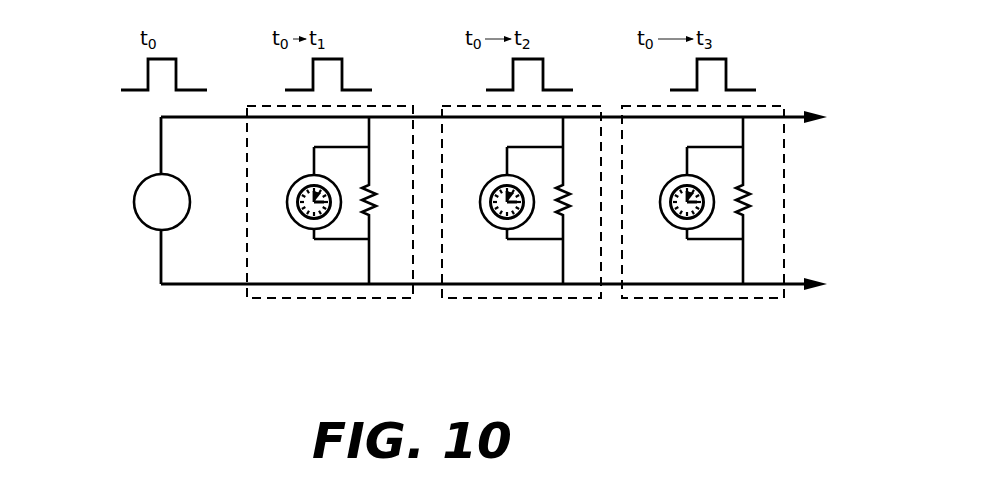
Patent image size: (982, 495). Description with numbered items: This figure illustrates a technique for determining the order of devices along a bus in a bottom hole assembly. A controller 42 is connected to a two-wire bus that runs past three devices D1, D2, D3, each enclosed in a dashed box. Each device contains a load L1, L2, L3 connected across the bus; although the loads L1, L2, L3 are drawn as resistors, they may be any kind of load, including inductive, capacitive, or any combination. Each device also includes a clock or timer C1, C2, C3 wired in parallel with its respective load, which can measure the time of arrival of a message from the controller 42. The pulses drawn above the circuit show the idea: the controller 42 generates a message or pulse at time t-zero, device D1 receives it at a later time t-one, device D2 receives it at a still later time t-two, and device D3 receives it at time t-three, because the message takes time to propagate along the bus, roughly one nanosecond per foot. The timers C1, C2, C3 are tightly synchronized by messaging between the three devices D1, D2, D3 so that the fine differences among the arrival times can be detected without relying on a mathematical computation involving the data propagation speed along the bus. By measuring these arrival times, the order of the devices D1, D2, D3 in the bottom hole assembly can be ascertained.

The controller 42 is at (142, 182).
The first device D1 is at (330, 202).
The second device D2 is at (521, 202).
The third device D3 is at (703, 202).
The clock or timer of device D1 C1 is at (298, 202).
The clock or timer of device D2 C2 is at (491, 202).
The clock or timer of device D3 C3 is at (671, 202).
The load of device D1 L1 is at (380, 200).
The load of device D2 L2 is at (574, 200).
The load of device D3 L3 is at (754, 200).